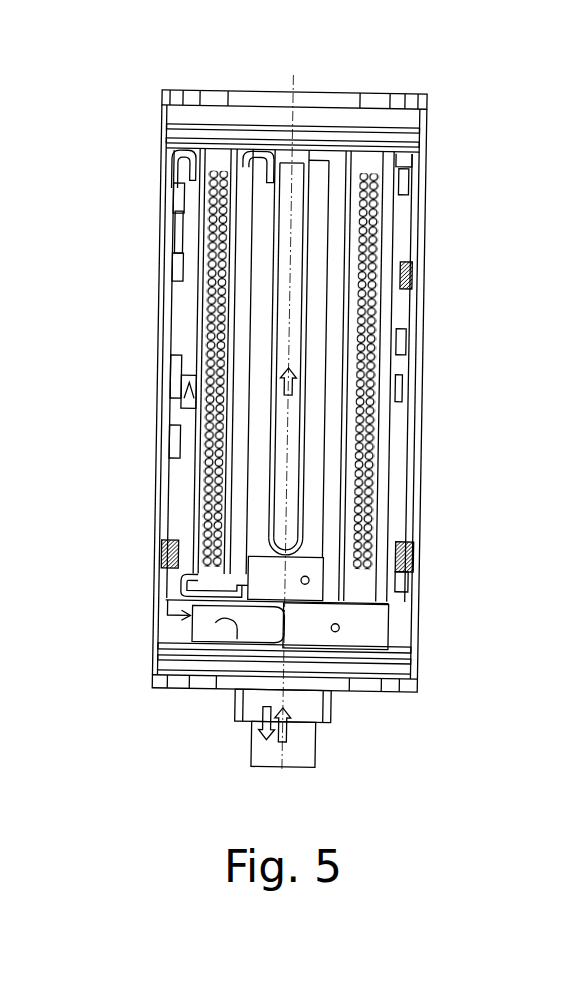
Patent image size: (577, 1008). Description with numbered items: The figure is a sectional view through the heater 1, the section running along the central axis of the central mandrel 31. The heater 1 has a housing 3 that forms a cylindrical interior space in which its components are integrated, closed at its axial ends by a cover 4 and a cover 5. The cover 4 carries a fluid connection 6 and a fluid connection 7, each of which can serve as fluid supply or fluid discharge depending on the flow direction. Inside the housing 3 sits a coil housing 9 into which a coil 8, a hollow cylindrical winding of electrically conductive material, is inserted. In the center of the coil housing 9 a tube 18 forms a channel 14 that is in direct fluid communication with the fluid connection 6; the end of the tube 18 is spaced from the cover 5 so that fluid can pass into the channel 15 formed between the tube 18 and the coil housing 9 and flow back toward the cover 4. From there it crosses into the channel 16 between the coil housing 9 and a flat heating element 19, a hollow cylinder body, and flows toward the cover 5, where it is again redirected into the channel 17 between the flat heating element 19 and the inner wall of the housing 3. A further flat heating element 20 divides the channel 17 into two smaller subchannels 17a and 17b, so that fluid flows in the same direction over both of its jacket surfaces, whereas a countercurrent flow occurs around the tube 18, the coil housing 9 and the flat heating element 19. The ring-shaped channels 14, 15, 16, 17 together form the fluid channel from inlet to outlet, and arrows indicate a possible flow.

The heater 1 is at (487, 267).
The housing 3 is at (158, 265).
The cover 4 is at (363, 691).
The cover 5 is at (342, 100).
The fluid connection 6 is at (267, 752).
The fluid connection 7 is at (268, 760).
The coil 8 is at (380, 412).
The coil housing 9 is at (386, 385).
The channel 14 is at (265, 468).
The channel 15 is at (205, 408).
The channel 16 is at (190, 392).
The channel 17 is at (158, 300).
The subchannel 17a is at (178, 440).
The subchannel 17b is at (165, 515).
The tube 18 is at (352, 337).
The flat heating element 19 is at (403, 190).
The flat heating element 20 is at (415, 273).
The central mandrel 31 is at (340, 488).